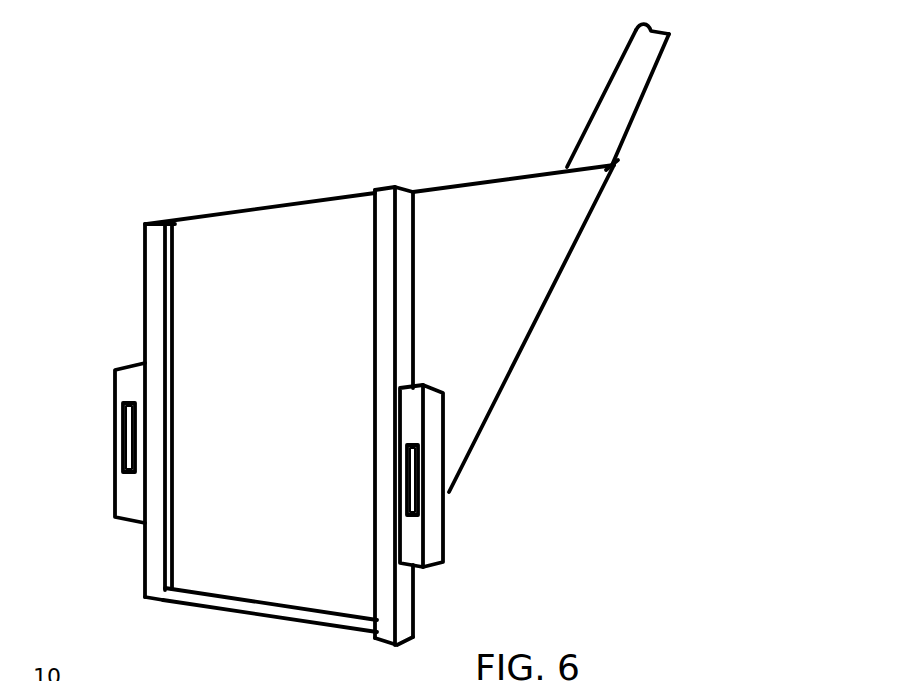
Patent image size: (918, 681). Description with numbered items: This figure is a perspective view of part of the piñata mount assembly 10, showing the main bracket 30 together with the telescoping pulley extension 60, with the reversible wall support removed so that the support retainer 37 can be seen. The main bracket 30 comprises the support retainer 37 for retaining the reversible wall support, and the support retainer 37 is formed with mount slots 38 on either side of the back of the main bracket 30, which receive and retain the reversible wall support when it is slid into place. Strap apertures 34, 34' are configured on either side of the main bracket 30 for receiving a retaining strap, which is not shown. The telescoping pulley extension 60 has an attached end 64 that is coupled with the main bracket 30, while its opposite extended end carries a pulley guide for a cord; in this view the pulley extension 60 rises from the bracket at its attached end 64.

The piñata mount assembly 10 is at (133, 301).
The main bracket 30 is at (513, 297).
The strap aperture 34 is at (90, 443).
The strap aperture 34' is at (478, 476).
The support retainer 37 is at (173, 247).
The mount slot 38 is at (373, 227).
The telescoping pulley extension 60 is at (633, 90).
The attached end 64 is at (612, 168).